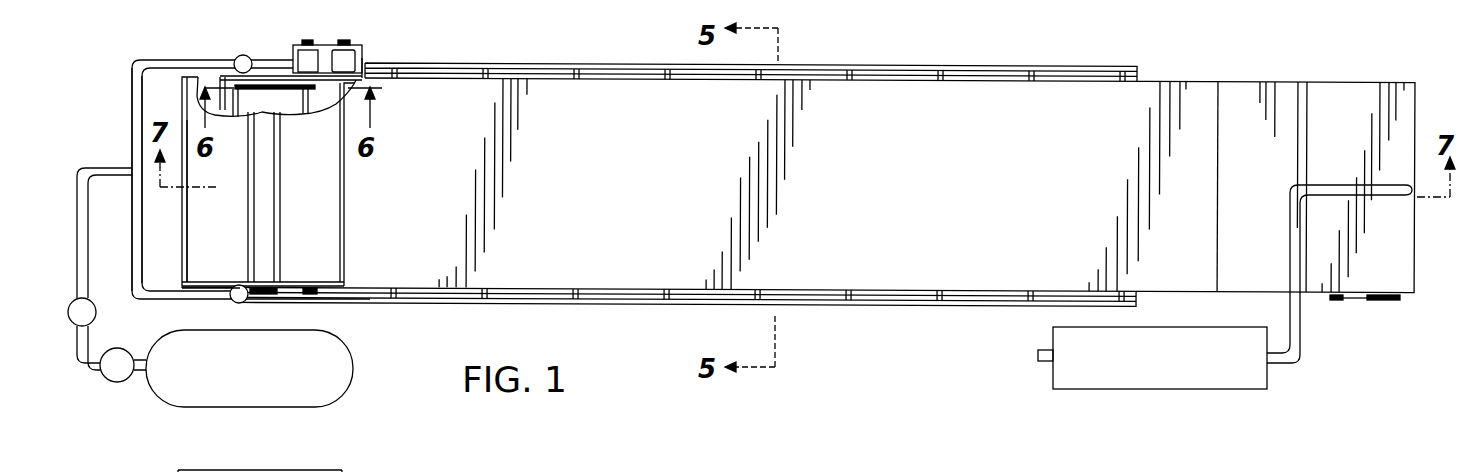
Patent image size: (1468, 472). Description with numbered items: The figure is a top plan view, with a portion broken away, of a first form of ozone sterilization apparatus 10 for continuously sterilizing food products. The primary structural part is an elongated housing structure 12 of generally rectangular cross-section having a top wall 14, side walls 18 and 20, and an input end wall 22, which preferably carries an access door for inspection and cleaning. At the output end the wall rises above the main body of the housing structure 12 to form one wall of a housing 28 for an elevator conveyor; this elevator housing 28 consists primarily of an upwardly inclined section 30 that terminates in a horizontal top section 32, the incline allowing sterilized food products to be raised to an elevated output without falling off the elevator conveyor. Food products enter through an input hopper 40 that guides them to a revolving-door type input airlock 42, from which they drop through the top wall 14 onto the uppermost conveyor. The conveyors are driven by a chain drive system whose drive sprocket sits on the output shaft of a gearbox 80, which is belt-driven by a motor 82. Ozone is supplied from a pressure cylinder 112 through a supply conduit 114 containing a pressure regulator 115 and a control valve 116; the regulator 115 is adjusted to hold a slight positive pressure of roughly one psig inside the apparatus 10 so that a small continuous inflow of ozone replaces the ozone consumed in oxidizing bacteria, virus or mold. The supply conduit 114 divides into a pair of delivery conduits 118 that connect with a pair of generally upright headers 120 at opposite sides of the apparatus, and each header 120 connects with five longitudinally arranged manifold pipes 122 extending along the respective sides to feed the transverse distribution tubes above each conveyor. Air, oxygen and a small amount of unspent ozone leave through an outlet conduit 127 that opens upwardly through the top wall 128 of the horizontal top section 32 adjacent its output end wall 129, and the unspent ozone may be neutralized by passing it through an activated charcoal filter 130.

The ozone sterilization apparatus 10 is at (830, 305).
The elongated housing structure 12 is at (877, 112).
The top wall 14 is at (656, 184).
The side wall 18 is at (918, 300).
The side wall 20 is at (1005, 78).
The input end wall 22 is at (181, 197).
The elevator conveyor housing 28 is at (1283, 80).
The upwardly inclined section 30 is at (1240, 92).
The horizontal top section 32 is at (1338, 92).
The input hopper 40 is at (345, 204).
The input airlock 42 is at (268, 183).
The gearbox 80 is at (310, 42).
The motor 82 is at (357, 48).
The pressure cylinder 112 is at (264, 408).
The supply conduit 114 is at (79, 190).
The pressure regulator 115 is at (106, 380).
The control valve 116 is at (97, 308).
The delivery conduits 118 is at (162, 58).
The headers 120 is at (243, 55).
The manifold pipes 122 is at (470, 63).
The outlet conduit 127 is at (1292, 333).
The top wall 128 is at (1339, 131).
The output end wall 129 is at (1416, 272).
The activated charcoal filter 130 is at (1238, 390).